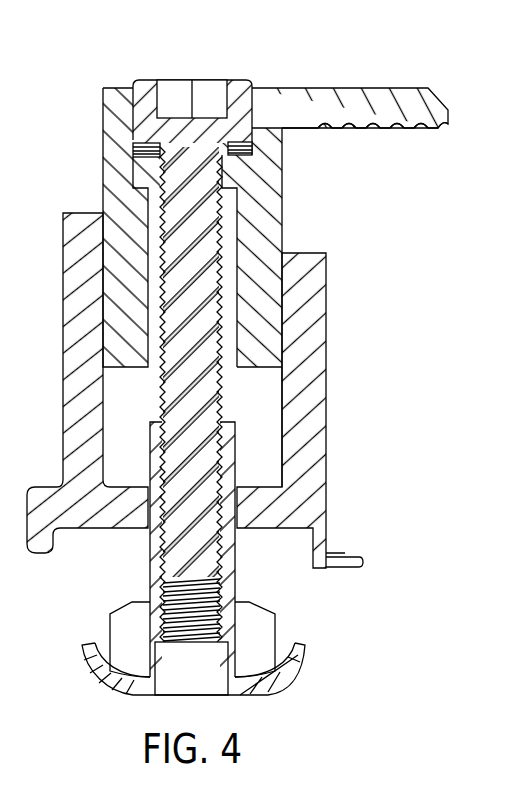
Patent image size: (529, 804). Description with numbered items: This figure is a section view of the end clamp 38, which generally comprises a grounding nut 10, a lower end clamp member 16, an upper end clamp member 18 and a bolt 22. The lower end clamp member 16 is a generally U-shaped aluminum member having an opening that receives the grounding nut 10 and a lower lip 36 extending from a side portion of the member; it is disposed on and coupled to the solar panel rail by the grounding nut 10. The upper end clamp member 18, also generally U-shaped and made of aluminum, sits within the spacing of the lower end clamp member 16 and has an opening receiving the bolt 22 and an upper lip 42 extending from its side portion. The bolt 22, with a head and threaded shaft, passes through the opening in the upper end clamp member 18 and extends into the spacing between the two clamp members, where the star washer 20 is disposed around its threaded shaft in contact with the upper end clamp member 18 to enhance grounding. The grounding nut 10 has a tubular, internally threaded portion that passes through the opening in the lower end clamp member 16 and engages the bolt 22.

The grounding nut 10 is at (100, 689).
The lower end clamp member 16 is at (96, 548).
The upper end clamp member 18 is at (301, 78).
The star washer 20 is at (258, 163).
The bolt 22 is at (217, 76).
The lower lip 36 is at (346, 573).
The end clamp 38 is at (348, 355).
The upper lip 42 is at (363, 88).